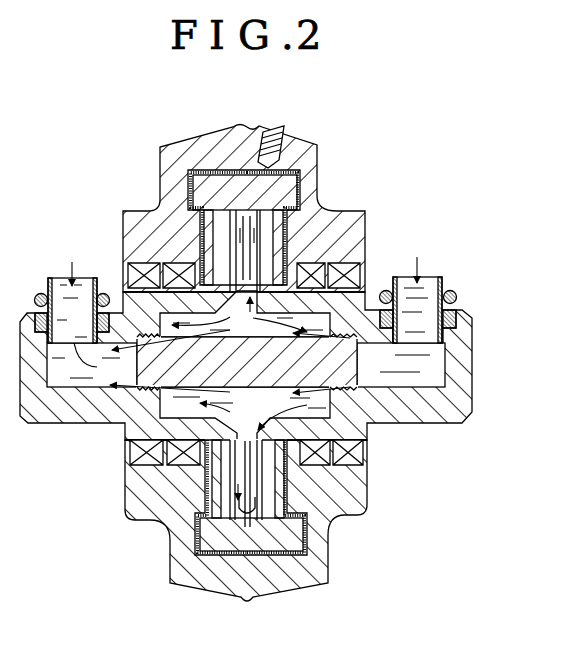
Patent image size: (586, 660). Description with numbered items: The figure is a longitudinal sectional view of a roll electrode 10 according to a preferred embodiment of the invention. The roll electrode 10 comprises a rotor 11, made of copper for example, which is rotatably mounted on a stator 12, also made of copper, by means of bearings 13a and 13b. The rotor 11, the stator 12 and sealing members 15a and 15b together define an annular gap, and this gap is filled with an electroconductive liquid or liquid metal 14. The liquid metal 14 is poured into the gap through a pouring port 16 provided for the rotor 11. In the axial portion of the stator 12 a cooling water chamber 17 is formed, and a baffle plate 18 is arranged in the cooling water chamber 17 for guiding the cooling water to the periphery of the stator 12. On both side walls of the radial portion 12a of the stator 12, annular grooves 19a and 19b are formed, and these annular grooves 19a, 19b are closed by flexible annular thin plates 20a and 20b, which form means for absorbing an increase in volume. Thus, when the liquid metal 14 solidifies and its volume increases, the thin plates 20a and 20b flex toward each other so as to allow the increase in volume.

The roll electrode 10 is at (393, 152).
The rotor 11 is at (318, 163).
The stator 12 is at (462, 386).
The radial portion 12a is at (294, 184).
The bearing 13a is at (352, 274).
The bearing 13b is at (133, 270).
The liquid metal 14 is at (357, 232).
The sealing member 15a is at (340, 240).
The sealing member 15b is at (203, 248).
The pouring port 16 is at (281, 131).
The cooling water chamber 17 is at (425, 292).
The baffle plate 18 is at (200, 190).
The annular groove 19a is at (279, 243).
The annular groove 19b is at (208, 243).
The flexible annular thin plate 20a is at (289, 252).
The flexible annular thin plate 20b is at (198, 207).